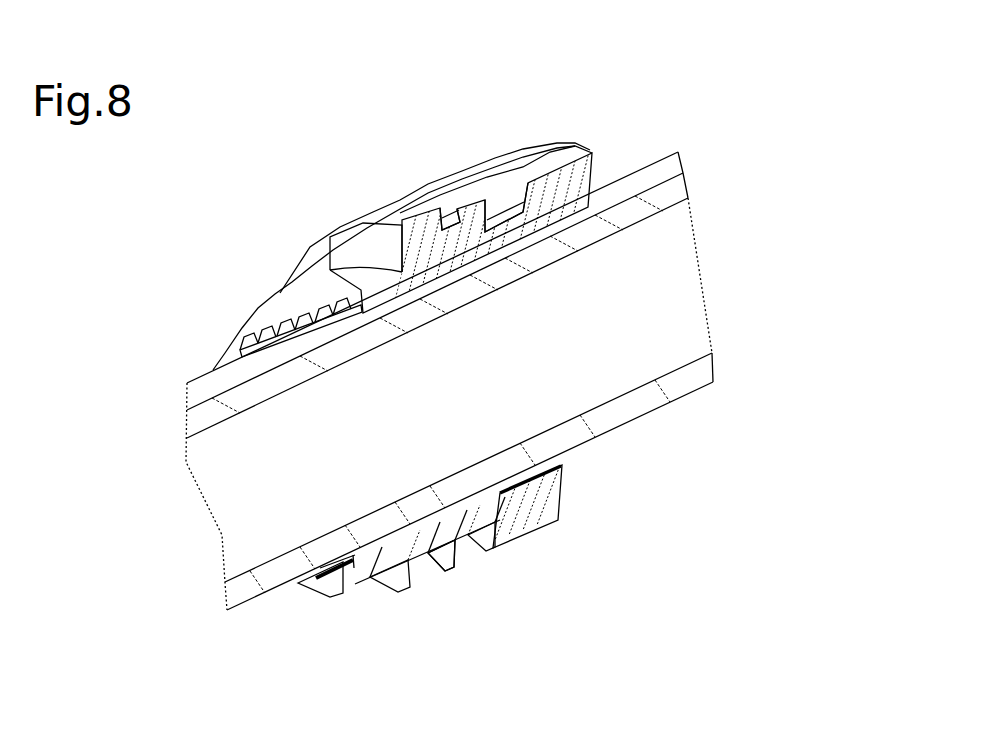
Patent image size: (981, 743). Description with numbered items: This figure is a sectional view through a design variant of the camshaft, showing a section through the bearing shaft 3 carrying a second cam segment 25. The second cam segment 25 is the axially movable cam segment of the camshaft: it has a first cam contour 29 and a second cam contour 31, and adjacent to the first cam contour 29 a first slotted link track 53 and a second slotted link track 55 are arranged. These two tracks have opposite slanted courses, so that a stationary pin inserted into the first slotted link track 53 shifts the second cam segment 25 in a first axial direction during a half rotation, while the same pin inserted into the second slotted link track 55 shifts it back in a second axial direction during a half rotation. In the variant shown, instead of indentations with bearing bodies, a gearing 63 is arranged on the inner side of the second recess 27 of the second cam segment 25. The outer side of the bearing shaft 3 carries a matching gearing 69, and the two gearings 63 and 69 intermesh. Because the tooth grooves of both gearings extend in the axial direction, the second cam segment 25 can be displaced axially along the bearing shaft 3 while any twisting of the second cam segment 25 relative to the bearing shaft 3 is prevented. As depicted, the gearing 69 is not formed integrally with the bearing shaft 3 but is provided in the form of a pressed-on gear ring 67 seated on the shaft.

The bearing shaft 3 is at (665, 168).
The second cam segment 25 is at (452, 585).
The second recess 27 is at (318, 584).
The first cam contour 29 is at (337, 198).
The second cam contour 31 is at (330, 268).
The first slotted link track 53 is at (466, 221).
The second slotted link track 55 is at (514, 206).
The gearing 63 is at (255, 330).
The pressed-on gear ring 67 is at (418, 530).
The gearing 69 is at (352, 575).